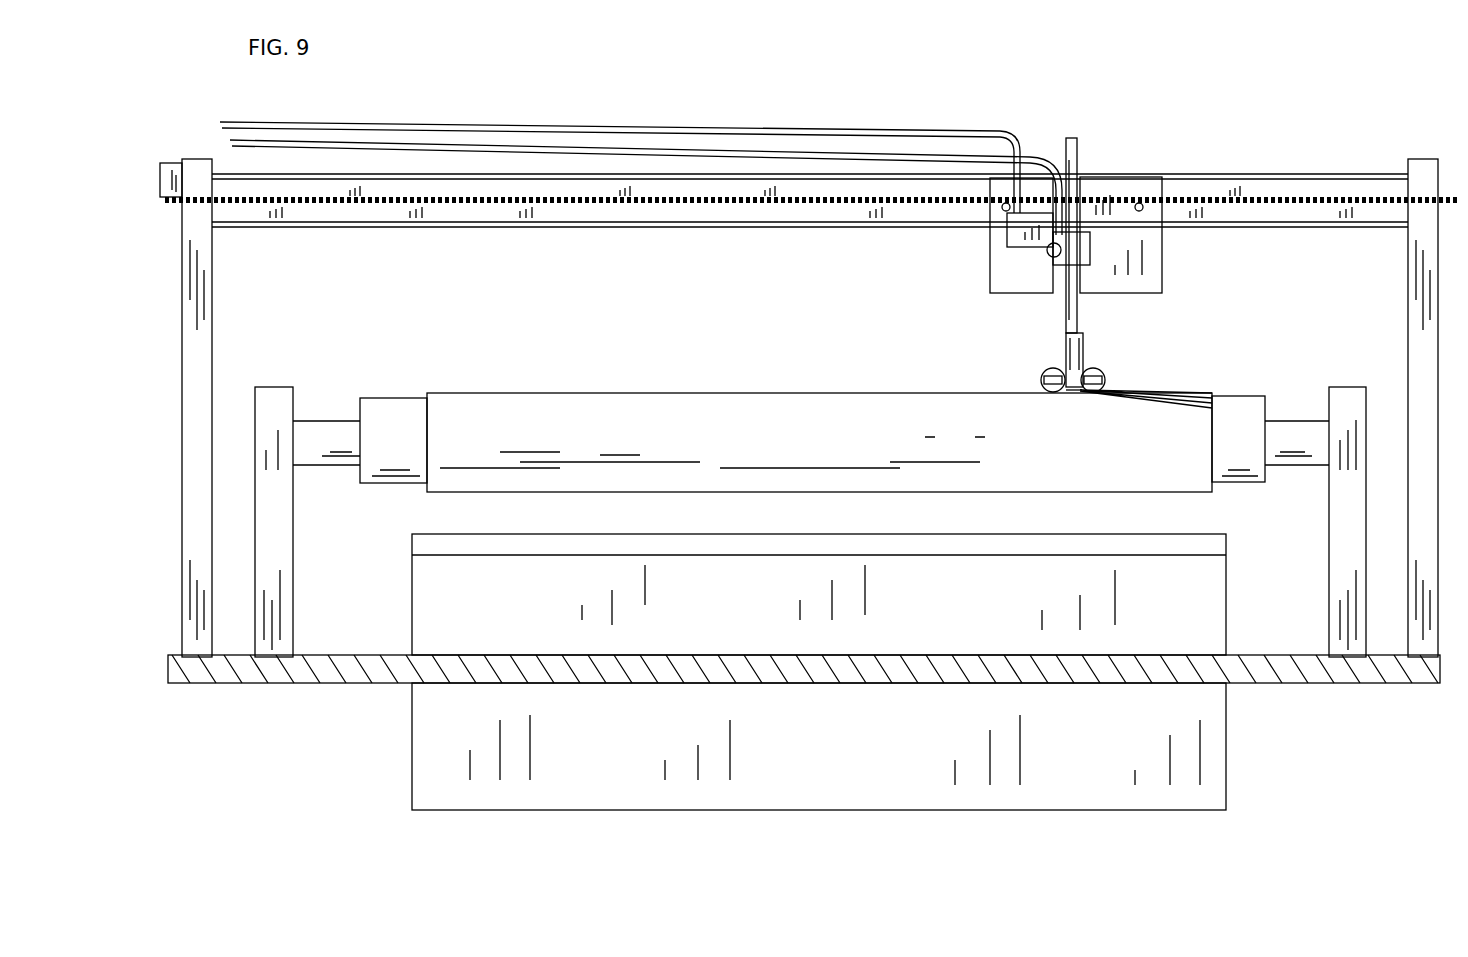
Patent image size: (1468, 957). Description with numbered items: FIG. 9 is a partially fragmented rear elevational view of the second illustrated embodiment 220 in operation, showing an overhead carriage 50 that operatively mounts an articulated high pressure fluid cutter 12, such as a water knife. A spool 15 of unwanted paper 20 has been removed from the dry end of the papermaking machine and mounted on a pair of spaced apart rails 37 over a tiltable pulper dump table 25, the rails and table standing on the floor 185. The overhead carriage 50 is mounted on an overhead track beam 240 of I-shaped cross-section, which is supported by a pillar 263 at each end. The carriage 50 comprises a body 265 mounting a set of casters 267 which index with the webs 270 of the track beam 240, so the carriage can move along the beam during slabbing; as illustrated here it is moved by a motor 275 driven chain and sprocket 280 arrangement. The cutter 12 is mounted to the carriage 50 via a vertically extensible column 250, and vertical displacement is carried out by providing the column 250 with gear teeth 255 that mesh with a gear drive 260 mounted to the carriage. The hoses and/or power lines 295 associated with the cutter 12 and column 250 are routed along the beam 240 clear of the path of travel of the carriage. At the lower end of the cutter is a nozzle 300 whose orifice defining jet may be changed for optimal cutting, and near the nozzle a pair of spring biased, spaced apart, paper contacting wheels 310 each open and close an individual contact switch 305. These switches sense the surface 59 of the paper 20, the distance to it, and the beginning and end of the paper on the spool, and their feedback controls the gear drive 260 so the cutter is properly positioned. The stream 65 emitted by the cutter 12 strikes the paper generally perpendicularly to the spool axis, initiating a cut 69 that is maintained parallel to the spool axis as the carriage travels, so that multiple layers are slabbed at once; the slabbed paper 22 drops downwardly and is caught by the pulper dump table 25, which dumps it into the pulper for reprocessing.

The high pressure fluid cutter 12 is at (1094, 346).
The spool 15 is at (386, 408).
The unwanted paper 20 is at (878, 430).
The slabbed paper 22 is at (1212, 405).
The pulper dump table 25 is at (1046, 814).
The rails 37 is at (286, 502).
The overhead carriage 50 is at (1168, 256).
The surface 59 is at (955, 438).
The stream 65 is at (1072, 395).
The cut 69 is at (1093, 395).
The floor 185 is at (277, 684).
The second illustrated embodiment 220 is at (1216, 152).
The overhead track beam 240 is at (727, 229).
The vertically extensible column 250 is at (1077, 158).
The gear teeth 255 is at (1066, 146).
The gear drive 260 is at (1012, 245).
The pillar 263 is at (200, 325).
The body 265 is at (1142, 185).
The casters 267 is at (1003, 210).
The webs 270 is at (790, 212).
The motor 275 is at (172, 163).
The chain and sprocket 280 is at (176, 210).
The hoses and/or power lines 295 is at (828, 132).
The nozzle 300 is at (1070, 352).
The contact switch 305 is at (1056, 348).
The paper contacting wheels 310 is at (1105, 380).